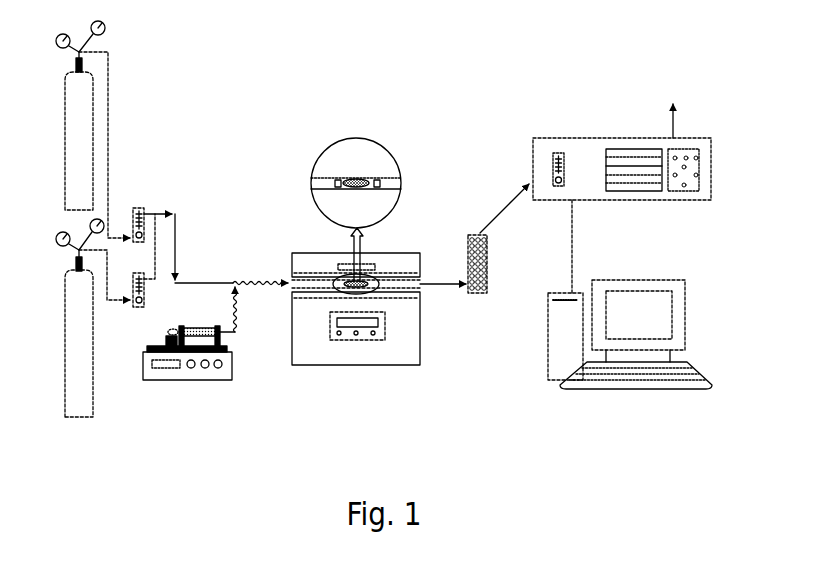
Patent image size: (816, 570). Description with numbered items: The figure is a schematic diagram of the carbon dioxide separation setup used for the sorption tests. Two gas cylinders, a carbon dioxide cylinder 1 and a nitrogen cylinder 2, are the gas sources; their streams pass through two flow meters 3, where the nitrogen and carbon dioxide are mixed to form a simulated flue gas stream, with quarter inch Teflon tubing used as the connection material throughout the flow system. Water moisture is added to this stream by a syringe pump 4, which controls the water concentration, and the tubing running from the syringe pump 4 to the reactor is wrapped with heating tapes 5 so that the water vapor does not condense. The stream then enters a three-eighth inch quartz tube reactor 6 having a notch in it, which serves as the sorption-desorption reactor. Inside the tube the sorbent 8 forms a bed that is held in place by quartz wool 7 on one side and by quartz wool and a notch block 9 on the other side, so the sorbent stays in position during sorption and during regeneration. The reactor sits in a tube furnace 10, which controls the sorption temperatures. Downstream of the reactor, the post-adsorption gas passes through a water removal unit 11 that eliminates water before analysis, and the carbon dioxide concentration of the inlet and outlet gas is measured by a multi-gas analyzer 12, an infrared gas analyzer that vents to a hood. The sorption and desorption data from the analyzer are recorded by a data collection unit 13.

The carbon dioxide cylinder 1 is at (93, 129).
The nitrogen cylinder 2 is at (93, 318).
The flow meter 3 is at (182, 257).
The syringe pump 4 is at (189, 370).
The heating tapes 5 is at (260, 307).
The quartz tube reactor 6 is at (282, 261).
The quartz wool 7 is at (337, 178).
The sorbent 8 is at (356, 177).
The quartz wool and notch block 9 is at (375, 178).
The tube furnace 10 is at (356, 325).
The water removal unit 11 is at (498, 238).
The multi-gas analyzer 12 is at (625, 181).
The data collection unit 13 is at (630, 351).